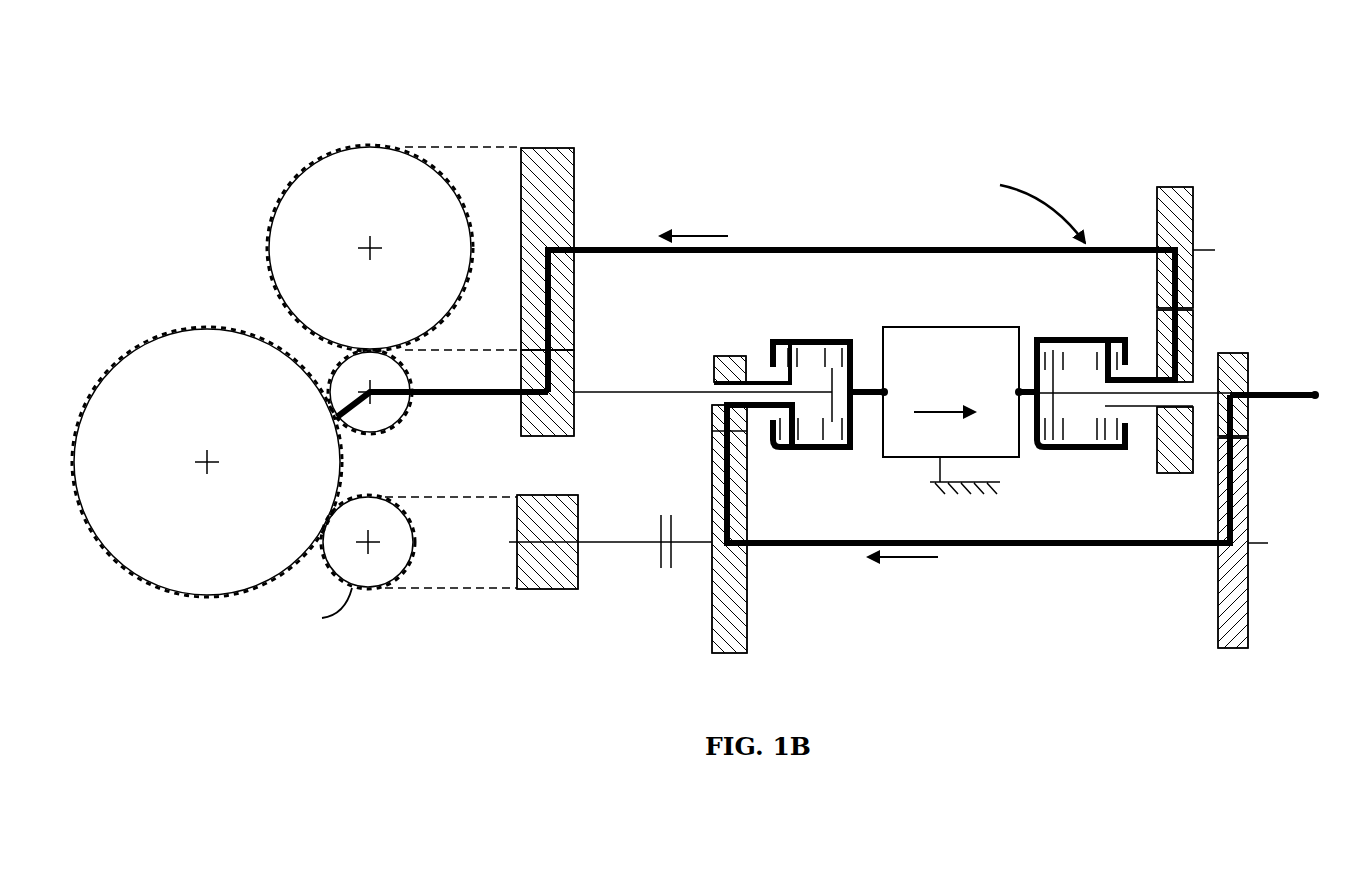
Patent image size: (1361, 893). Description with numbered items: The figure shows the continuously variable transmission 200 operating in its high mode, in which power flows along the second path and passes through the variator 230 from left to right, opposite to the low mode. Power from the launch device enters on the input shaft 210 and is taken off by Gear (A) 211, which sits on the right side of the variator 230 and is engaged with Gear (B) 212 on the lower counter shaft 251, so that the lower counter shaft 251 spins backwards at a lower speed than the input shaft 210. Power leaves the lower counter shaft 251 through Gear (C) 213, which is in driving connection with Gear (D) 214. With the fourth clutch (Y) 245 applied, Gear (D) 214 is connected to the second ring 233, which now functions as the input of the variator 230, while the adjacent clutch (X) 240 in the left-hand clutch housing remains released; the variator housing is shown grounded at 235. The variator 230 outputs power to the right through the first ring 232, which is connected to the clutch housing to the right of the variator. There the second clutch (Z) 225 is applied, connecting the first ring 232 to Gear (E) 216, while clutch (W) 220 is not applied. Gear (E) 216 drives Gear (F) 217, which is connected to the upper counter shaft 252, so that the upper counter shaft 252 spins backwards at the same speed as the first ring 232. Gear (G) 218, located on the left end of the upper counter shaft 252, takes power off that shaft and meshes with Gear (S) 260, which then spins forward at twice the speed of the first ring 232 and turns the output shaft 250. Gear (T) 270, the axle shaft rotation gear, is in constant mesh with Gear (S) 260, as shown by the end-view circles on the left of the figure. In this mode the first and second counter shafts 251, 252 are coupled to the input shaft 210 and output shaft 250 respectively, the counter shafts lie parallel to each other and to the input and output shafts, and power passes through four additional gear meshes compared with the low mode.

The transmission 200 is at (1105, 110).
The input shaft 210 is at (1268, 390).
The Gear (A) 211 is at (1233, 352).
The Gear (B) 212 is at (1248, 628).
The Gear (C) 213 is at (714, 653).
The Gear (D) 214 is at (728, 355).
The Gear (E) 216 is at (1172, 452).
The Gear (F) 217 is at (1193, 207).
The Gear (G) 218 is at (307, 182).
The Clutch (W) 220 is at (1062, 455).
The second clutch (Z) 225 is at (1113, 334).
The variator 230 is at (935, 328).
The Ring 1 (R1) 232 is at (1020, 437).
The Ring 2 (R2) 233 is at (880, 372).
The ground 235 is at (942, 490).
The Clutch (X) 240 is at (830, 455).
The fourth clutch (Y) 245 is at (790, 334).
The output shaft 250 is at (458, 398).
The lower counter shaft 251 is at (1032, 547).
The upper counter shaft 252 is at (790, 245).
The Gear (S) 260 is at (340, 365).
The Gear (T) 270 is at (138, 390).